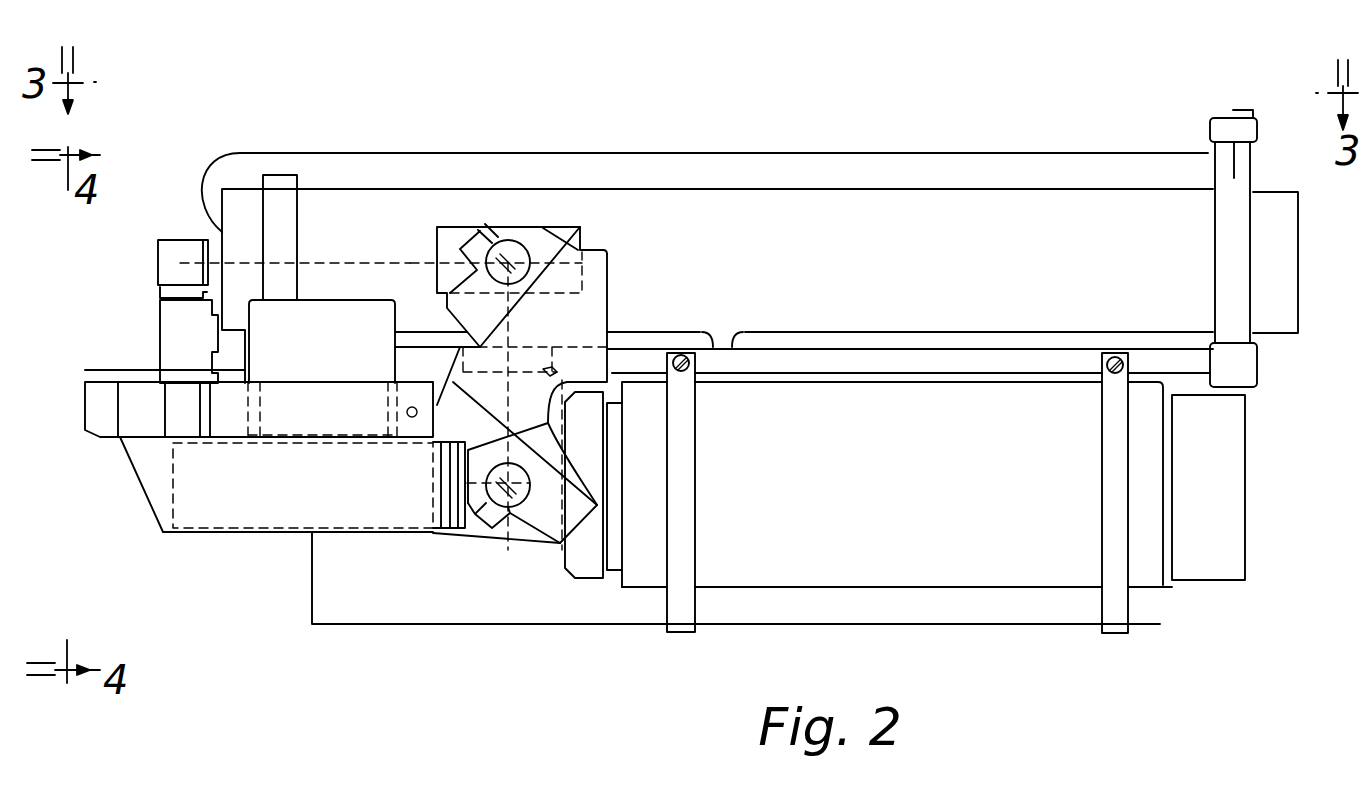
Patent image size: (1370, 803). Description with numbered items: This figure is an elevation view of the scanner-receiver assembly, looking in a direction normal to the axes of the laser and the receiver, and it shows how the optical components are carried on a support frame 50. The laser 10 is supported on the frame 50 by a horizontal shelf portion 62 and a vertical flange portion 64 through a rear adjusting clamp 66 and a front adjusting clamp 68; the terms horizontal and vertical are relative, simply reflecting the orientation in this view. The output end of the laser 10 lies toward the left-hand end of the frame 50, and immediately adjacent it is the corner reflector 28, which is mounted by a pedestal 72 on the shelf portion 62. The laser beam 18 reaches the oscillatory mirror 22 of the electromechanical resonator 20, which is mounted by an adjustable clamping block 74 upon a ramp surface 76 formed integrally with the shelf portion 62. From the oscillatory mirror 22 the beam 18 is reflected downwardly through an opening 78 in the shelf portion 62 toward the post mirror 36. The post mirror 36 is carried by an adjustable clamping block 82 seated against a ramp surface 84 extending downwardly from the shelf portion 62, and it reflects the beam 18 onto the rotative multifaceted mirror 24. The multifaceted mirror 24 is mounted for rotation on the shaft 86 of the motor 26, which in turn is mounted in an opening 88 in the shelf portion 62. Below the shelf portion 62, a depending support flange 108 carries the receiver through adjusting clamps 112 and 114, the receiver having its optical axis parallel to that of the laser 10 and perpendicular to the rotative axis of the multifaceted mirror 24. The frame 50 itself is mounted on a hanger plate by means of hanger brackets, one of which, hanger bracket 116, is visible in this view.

The laser 10 is at (885, 188).
The laser beam 18 is at (329, 260).
The electromechanical resonator 20 is at (452, 226).
The oscillatory mirror 22 is at (509, 252).
The rotative multifaceted mirror 24 is at (437, 530).
The motor 26 is at (350, 310).
The corner reflector 28 is at (170, 252).
The post mirror 36 is at (507, 503).
The support frame 50 is at (1080, 150).
The horizontal shelf portion 62 is at (820, 347).
The vertical flange portion 64 is at (805, 152).
The rear adjusting clamp 66 is at (1228, 185).
The front adjusting clamp 68 is at (285, 190).
The pedestal 72 is at (162, 330).
The adjustable clamping block 74 is at (550, 247).
The ramp surface 76 is at (555, 278).
The opening 78 is at (558, 372).
The adjustable clamping block 82 is at (575, 520).
The ramp surface 84 is at (486, 418).
The shaft 86 is at (302, 445).
The opening 88 is at (386, 392).
The depending support flange 108 is at (1032, 626).
The adjusting clamp 112 is at (1115, 611).
The adjusting clamp 114 is at (684, 603).
The hanger bracket 116 is at (895, 381).